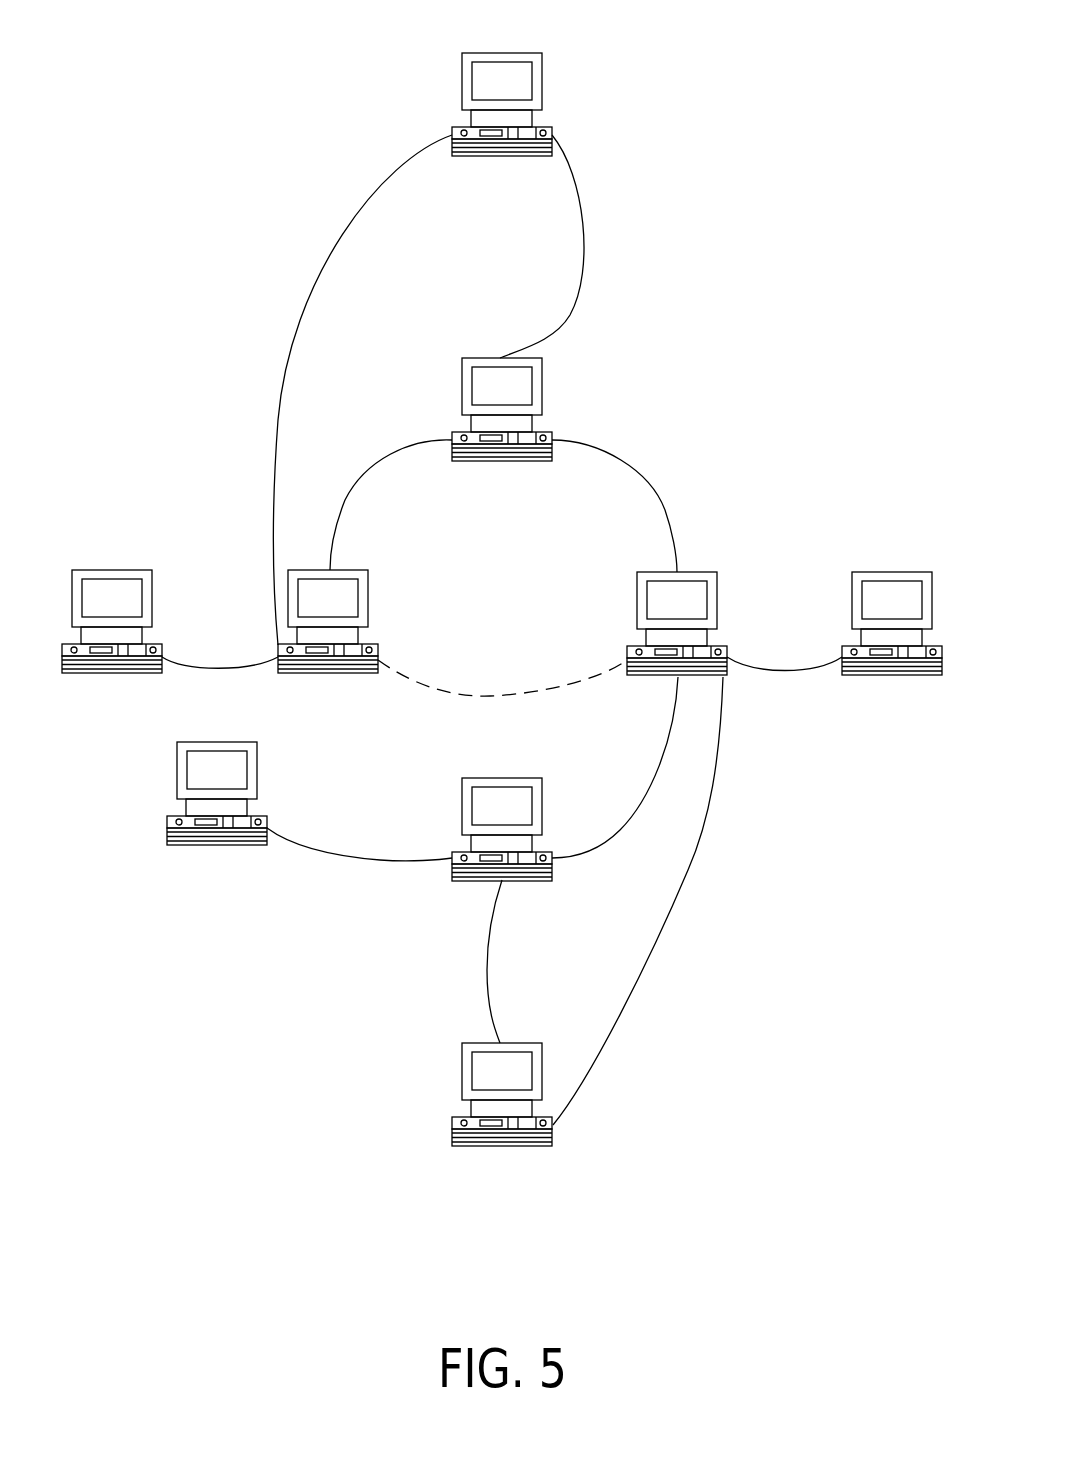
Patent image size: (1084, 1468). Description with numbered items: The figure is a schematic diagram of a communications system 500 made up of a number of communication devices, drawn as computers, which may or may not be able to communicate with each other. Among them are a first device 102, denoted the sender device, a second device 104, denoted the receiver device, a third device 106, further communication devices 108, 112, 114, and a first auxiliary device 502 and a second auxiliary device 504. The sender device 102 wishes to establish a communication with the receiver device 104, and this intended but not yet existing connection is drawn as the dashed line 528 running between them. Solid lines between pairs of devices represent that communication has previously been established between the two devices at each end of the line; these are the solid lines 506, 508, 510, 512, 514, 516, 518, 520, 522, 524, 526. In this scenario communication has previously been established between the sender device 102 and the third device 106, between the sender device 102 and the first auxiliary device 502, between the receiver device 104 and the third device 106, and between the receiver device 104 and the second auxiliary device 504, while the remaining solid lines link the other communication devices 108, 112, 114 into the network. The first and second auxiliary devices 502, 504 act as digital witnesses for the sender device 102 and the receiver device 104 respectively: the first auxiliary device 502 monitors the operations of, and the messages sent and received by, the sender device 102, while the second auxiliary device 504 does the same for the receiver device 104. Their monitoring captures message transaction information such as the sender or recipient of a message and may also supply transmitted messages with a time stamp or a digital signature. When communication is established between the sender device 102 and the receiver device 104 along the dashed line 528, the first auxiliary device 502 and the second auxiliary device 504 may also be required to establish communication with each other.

The communications system 500 is at (741, 117).
The sender device 102 is at (340, 673).
The receiver device 104 is at (717, 600).
The third device 106 is at (505, 462).
The communication device 108 is at (505, 53).
The communication device 112 is at (452, 1124).
The communication device 114 is at (218, 843).
The first auxiliary device 502 is at (112, 675).
The second auxiliary device 504 is at (895, 675).
The solid line 514 is at (505, 779).
The communication link 506 is at (336, 246).
The communication link 508 is at (586, 240).
The solid line 510 is at (405, 436).
The solid line 512 is at (648, 477).
The solid line 516 is at (595, 862).
The solid line 518 is at (712, 858).
The solid line 520 is at (307, 847).
The solid line 522 is at (487, 962).
The solid line 524 is at (207, 668).
The solid line 526 is at (808, 672).
The dashed line 528 is at (478, 692).